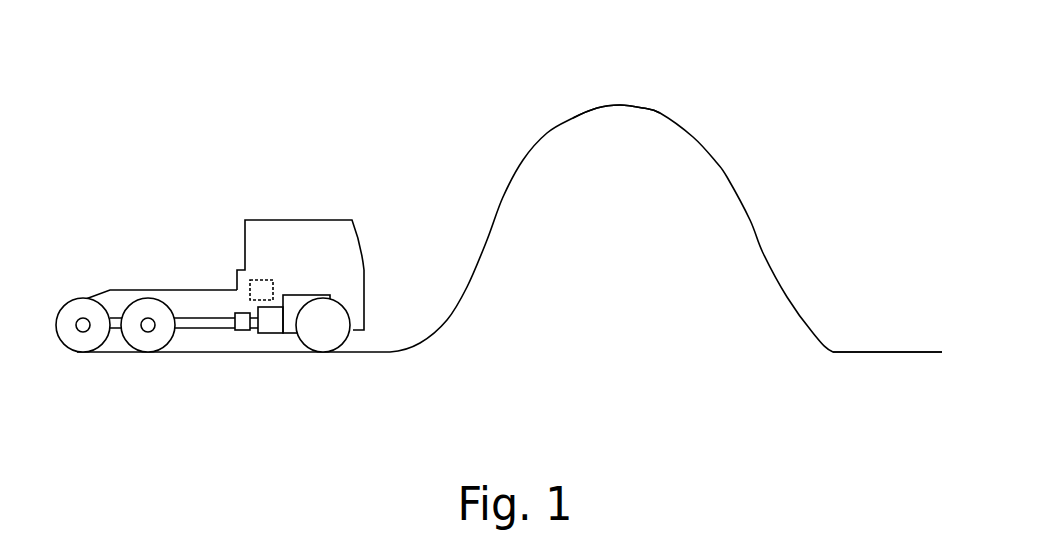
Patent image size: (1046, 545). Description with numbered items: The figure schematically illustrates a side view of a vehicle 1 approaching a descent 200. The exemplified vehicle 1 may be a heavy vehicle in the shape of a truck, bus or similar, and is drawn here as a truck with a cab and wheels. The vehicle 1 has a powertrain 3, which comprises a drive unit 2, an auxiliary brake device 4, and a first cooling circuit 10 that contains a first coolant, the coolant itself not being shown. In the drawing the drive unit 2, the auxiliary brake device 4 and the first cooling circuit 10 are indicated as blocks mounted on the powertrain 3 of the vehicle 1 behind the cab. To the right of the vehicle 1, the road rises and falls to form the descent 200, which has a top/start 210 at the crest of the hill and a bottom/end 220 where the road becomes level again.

The vehicle 1 is at (210, 217).
The drive unit 2 is at (294, 295).
The powertrain 3 is at (207, 338).
The auxiliary brake device 4 is at (243, 313).
The first cooling circuit 10 is at (262, 280).
The descent 200 is at (742, 198).
The top/start of the descent 210 is at (621, 94).
The bottom/end of the descent 220 is at (841, 334).